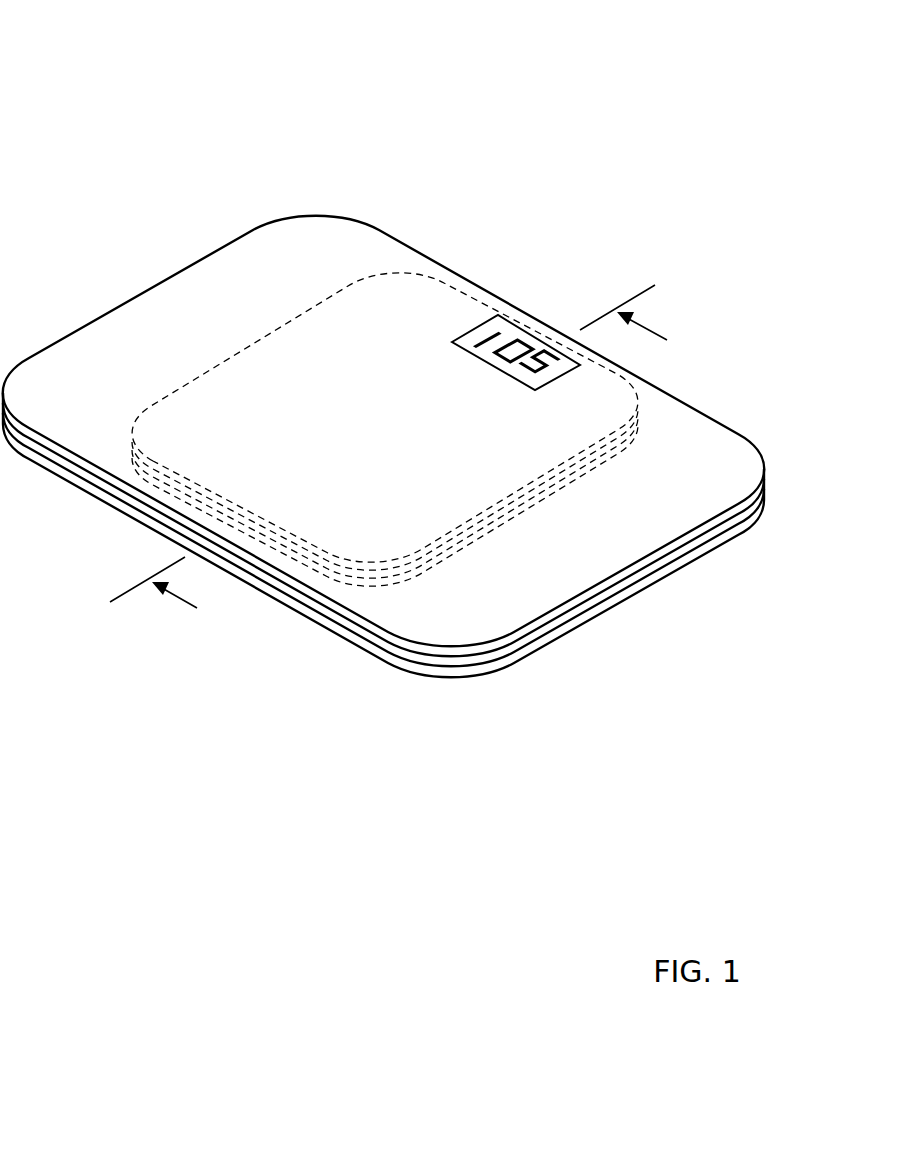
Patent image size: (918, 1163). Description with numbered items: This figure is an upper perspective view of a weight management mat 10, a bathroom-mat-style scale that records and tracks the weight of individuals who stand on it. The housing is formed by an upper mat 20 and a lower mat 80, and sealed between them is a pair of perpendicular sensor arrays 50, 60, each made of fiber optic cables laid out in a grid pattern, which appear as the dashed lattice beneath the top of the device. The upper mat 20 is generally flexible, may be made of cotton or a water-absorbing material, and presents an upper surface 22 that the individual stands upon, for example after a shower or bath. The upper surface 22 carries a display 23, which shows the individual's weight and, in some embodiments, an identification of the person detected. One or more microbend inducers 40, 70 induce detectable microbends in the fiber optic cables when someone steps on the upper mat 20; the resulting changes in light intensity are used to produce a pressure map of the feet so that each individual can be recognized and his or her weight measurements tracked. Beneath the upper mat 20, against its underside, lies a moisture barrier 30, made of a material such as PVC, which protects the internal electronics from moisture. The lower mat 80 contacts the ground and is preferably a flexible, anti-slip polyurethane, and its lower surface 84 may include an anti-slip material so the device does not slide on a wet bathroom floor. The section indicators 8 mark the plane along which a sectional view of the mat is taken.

The weight management mat 10 is at (181, 101).
The upper mat 20 is at (395, 237).
The upper surface 22 is at (221, 268).
The display 23 is at (513, 333).
The microbend inducer 40 is at (432, 266).
The sensor array 50 is at (638, 398).
The sensor array 60 is at (148, 392).
The microbend inducer 70 is at (128, 472).
The moisture barrier 30 is at (390, 648).
The lower surface 84 is at (600, 613).
The lower mat 80 is at (450, 680).
The section line 8 is at (398, 458).